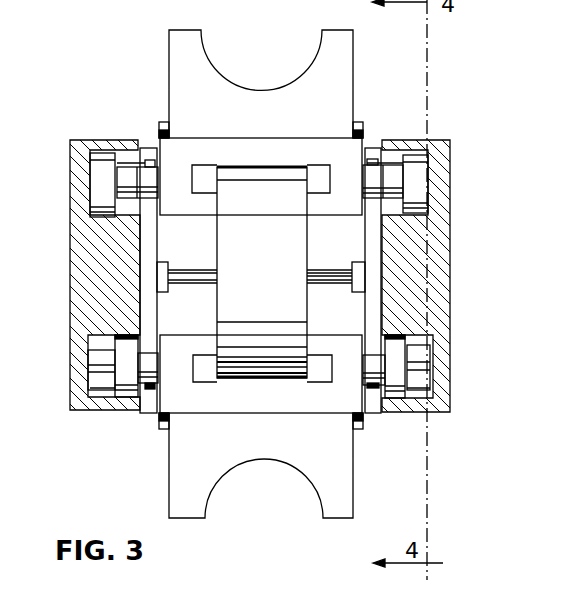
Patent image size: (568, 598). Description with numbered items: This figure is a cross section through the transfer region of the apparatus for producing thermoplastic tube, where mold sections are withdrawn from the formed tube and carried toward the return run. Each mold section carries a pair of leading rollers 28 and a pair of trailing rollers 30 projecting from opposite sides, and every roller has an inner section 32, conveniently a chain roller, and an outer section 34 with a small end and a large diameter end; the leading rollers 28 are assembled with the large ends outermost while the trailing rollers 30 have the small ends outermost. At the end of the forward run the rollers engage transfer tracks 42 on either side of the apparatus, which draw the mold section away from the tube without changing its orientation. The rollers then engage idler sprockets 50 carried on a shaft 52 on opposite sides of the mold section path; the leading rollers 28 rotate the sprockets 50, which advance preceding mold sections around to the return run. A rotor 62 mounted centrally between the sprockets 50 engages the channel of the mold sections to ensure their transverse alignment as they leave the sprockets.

The leading rollers 28 is at (127, 153).
The trailing rollers 30 is at (101, 391).
The inner section 32 is at (148, 180).
The outer section 34 is at (108, 175).
The transfer tracks 42 is at (110, 337).
The idler sprockets 50 is at (150, 268).
The shaft 52 is at (345, 293).
The rotor 62 is at (268, 210).